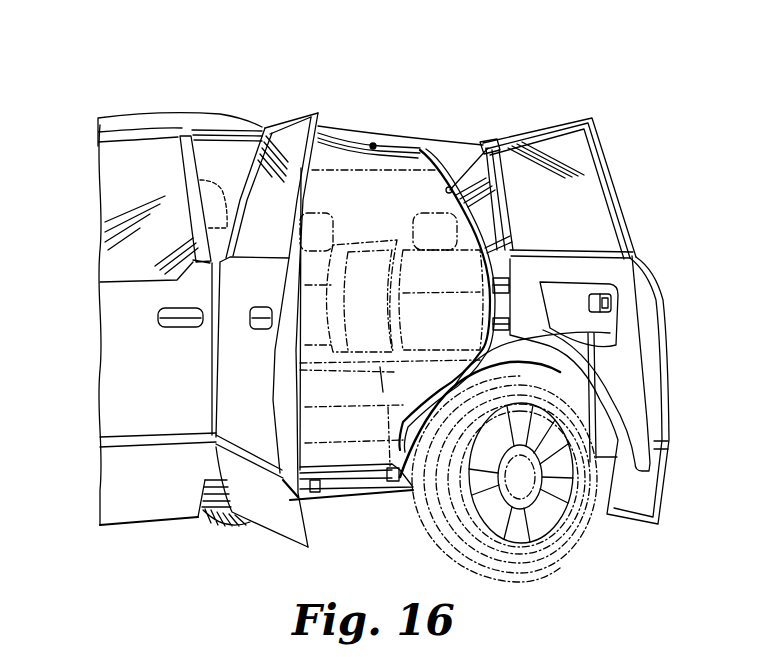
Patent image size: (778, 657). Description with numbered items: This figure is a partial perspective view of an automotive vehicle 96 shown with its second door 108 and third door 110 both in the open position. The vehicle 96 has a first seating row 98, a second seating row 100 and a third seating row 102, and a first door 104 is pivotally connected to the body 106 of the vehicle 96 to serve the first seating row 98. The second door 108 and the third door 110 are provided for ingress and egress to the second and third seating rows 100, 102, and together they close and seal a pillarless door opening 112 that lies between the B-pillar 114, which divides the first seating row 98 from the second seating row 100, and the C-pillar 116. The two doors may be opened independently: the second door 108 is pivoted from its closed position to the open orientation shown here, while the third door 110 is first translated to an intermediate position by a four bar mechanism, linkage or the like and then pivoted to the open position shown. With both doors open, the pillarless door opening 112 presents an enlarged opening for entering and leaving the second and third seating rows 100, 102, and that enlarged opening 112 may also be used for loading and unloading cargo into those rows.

The automotive vehicle 96 is at (643, 60).
The first seating row 98 is at (128, 100).
The second seating row 100 is at (247, 65).
The third seating row 102 is at (386, 95).
The first door 104 is at (112, 138).
The body 106 is at (478, 135).
The second door 108 is at (290, 112).
The third door 110 is at (652, 252).
The pillarless door opening 112 is at (378, 143).
The B-pillar 114 is at (197, 153).
The C-pillar 116 is at (500, 143).